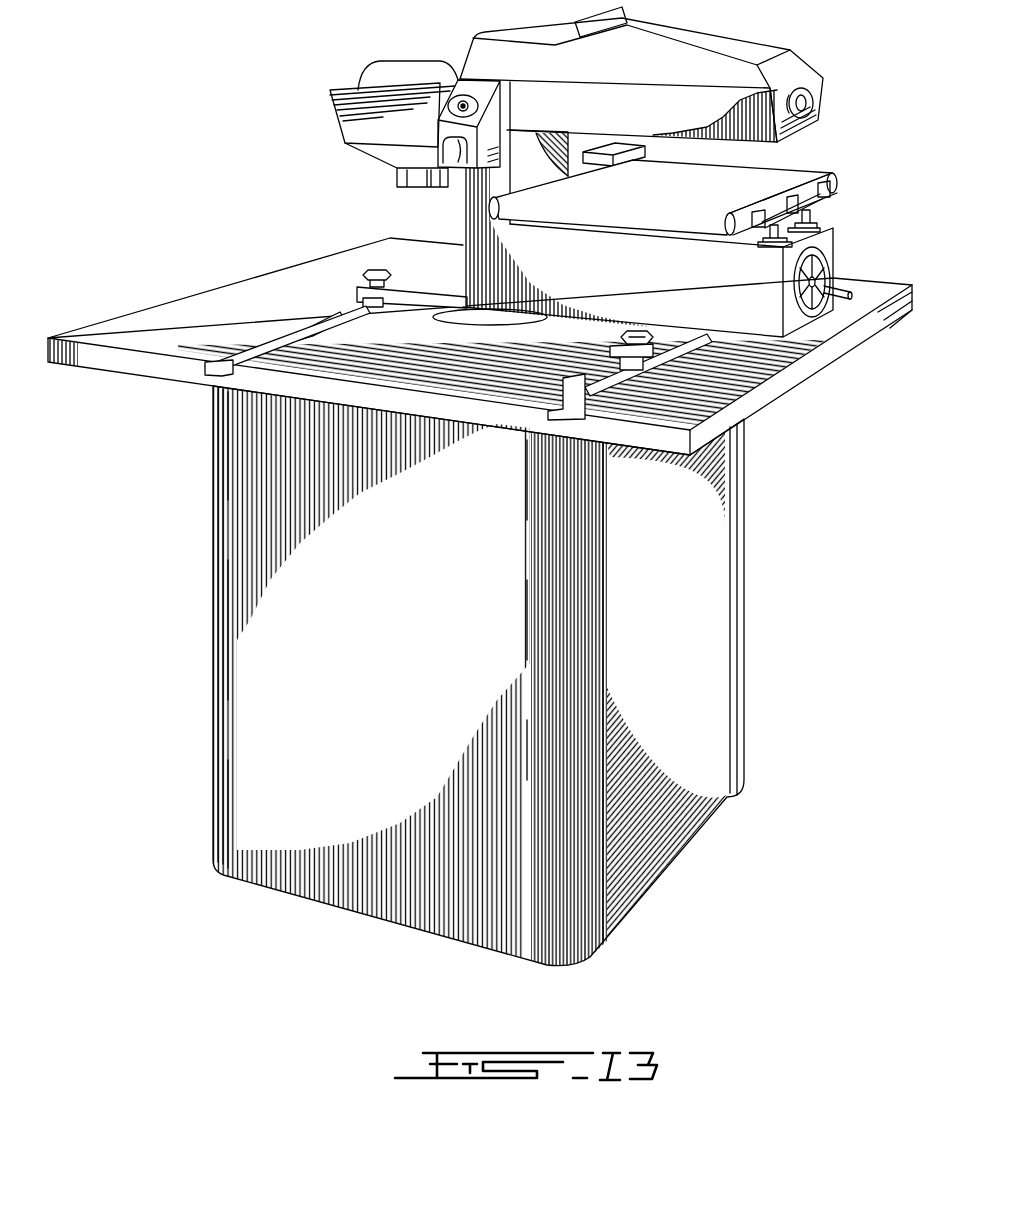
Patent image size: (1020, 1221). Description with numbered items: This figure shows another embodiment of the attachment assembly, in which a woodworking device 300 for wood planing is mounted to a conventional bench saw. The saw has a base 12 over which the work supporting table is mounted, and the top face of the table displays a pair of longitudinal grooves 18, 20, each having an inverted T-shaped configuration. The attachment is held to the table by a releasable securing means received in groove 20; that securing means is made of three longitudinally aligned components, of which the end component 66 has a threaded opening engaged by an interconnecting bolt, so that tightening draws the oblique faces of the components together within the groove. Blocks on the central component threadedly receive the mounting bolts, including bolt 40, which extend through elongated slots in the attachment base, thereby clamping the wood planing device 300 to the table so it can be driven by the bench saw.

The base 12 is at (751, 634).
The longitudinal groove 18 is at (203, 371).
The longitudinal groove 20 is at (573, 378).
The bolt 40 is at (652, 347).
The component 66 is at (553, 382).
The woodworking device 300 is at (805, 174).